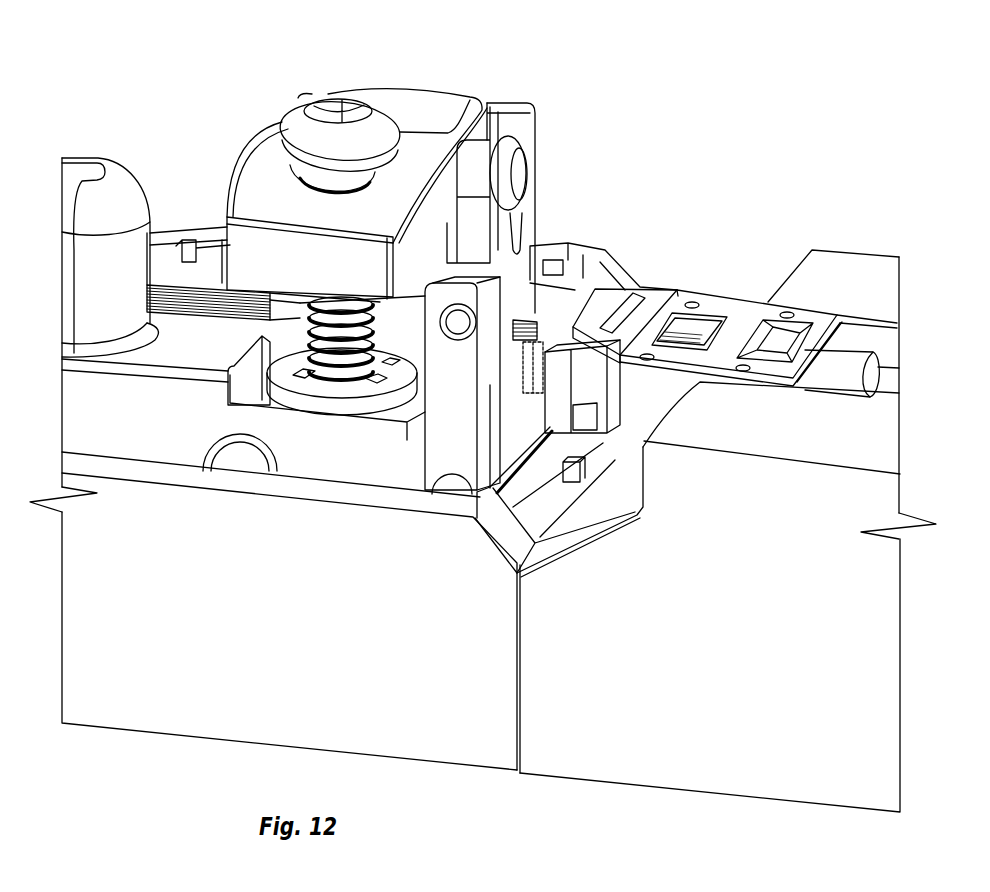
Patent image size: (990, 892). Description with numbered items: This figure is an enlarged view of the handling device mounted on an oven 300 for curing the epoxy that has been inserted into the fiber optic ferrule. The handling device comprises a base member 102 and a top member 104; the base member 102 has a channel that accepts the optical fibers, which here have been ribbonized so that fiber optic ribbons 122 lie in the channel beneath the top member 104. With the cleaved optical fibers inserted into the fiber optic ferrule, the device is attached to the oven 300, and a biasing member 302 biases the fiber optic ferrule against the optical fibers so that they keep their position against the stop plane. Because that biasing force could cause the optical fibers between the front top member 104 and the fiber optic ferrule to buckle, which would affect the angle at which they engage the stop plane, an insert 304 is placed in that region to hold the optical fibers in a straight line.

The base member 102 is at (515, 732).
The top member 104 is at (415, 98).
The fiber optic ribbons 122 is at (211, 292).
The oven 300 is at (890, 443).
The biasing member 302 is at (852, 360).
The insert 304 is at (652, 290).